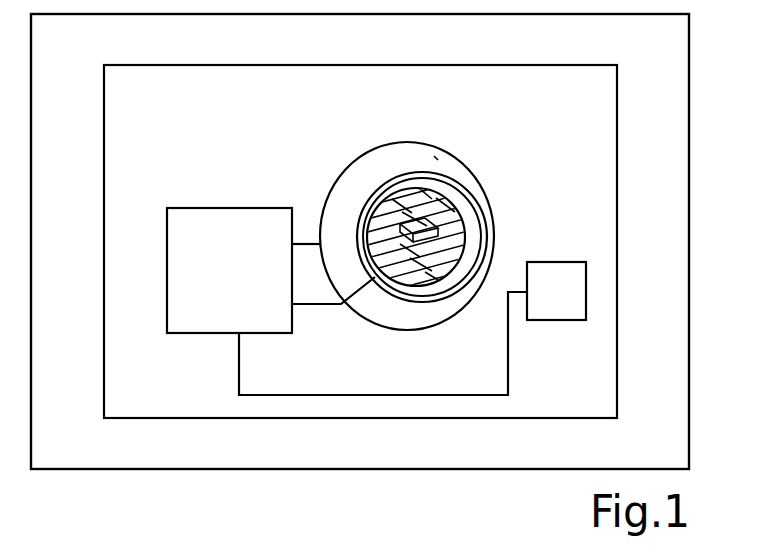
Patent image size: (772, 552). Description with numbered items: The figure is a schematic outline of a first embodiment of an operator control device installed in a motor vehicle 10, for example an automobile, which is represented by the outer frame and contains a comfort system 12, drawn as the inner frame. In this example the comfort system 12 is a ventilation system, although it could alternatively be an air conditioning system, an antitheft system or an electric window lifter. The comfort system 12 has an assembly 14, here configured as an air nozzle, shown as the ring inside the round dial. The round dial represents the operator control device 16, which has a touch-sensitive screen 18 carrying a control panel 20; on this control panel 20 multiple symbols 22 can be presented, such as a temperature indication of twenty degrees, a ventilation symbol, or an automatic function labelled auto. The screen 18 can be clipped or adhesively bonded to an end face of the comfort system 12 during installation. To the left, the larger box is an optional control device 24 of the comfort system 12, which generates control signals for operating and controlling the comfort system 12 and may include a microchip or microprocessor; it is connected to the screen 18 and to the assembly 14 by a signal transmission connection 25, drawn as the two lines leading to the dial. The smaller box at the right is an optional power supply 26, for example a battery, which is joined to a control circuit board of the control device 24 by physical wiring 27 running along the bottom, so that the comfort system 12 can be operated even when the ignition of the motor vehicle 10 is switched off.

The motor vehicle 10 is at (662, 324).
The comfort system 12 is at (598, 247).
The assembly 14 is at (487, 203).
The operator control device 16 is at (372, 144).
The touch-sensitive screen 18 is at (437, 157).
The control panel 20 is at (388, 302).
The symbols 22 is at (343, 189).
The control device 24 is at (226, 208).
The signal transmission connection 25 is at (313, 240).
The power supply 26 is at (559, 320).
The physical wiring 27 is at (239, 362).